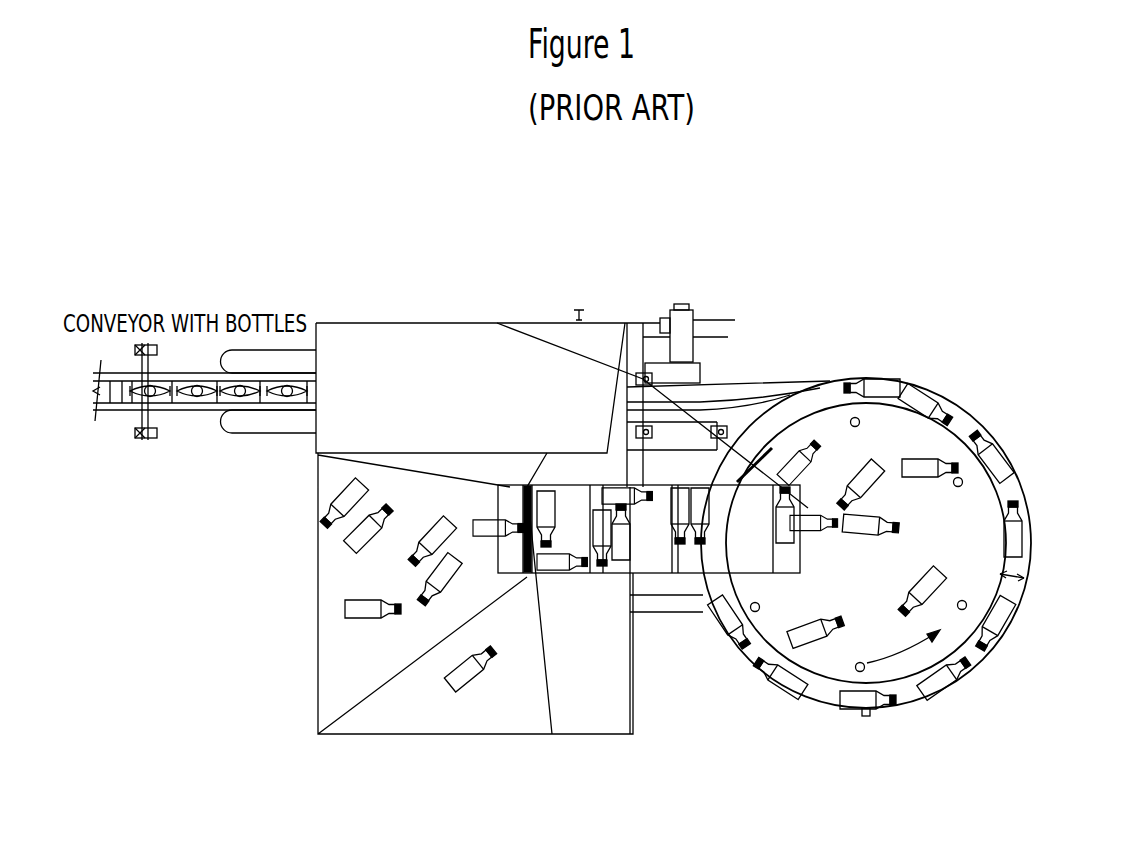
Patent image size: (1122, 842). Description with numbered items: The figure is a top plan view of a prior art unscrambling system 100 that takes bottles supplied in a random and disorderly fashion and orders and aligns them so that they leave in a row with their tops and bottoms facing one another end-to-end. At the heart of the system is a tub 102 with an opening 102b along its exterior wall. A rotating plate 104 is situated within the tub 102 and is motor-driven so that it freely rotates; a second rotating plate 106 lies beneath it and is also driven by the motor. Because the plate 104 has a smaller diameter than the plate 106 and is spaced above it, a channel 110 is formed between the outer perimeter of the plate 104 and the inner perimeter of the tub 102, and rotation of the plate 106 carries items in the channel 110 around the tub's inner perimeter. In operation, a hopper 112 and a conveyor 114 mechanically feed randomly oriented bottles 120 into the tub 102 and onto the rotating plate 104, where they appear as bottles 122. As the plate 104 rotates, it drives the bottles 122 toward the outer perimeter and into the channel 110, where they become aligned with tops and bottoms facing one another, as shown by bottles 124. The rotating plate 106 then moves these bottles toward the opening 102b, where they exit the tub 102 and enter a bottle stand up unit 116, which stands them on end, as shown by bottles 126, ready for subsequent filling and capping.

The unscrambling system 100 is at (812, 727).
The tub 102 is at (1000, 452).
The opening 102b is at (787, 381).
The rotating plate 104 is at (983, 513).
The second rotating plate 106 is at (1008, 495).
The channel 110 is at (1020, 568).
The hopper 112 is at (510, 737).
The conveyor 114 is at (653, 575).
The bottle stand up unit 116 is at (368, 323).
The randomly oriented bottles 120 is at (353, 542).
The bottles 122 is at (847, 492).
The bottles 124 is at (985, 433).
The bottles 126 is at (197, 393).